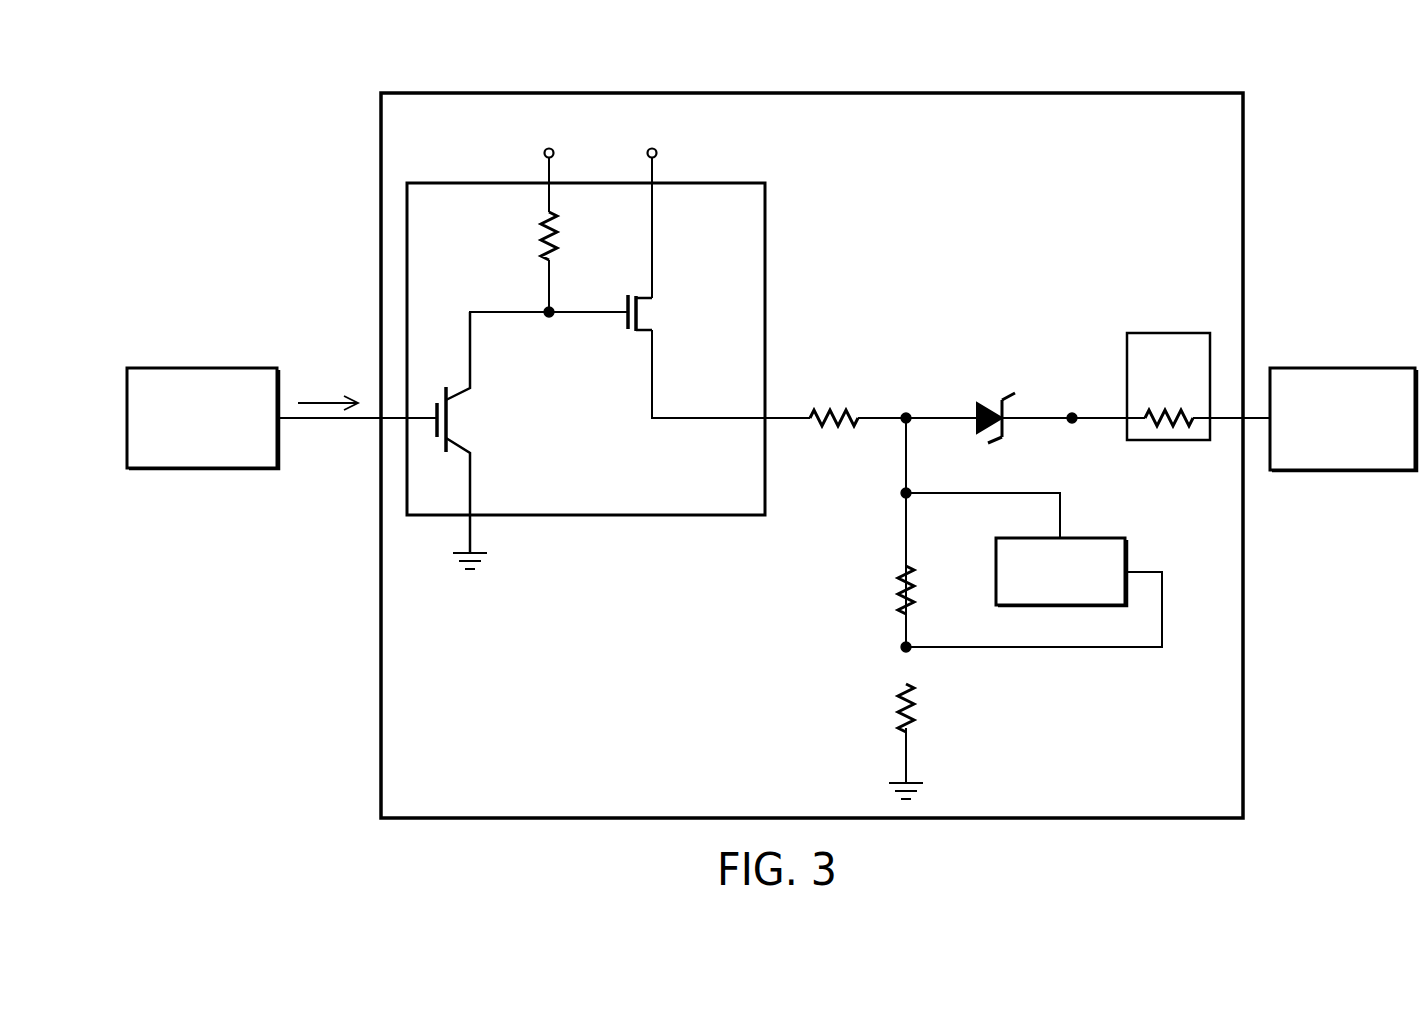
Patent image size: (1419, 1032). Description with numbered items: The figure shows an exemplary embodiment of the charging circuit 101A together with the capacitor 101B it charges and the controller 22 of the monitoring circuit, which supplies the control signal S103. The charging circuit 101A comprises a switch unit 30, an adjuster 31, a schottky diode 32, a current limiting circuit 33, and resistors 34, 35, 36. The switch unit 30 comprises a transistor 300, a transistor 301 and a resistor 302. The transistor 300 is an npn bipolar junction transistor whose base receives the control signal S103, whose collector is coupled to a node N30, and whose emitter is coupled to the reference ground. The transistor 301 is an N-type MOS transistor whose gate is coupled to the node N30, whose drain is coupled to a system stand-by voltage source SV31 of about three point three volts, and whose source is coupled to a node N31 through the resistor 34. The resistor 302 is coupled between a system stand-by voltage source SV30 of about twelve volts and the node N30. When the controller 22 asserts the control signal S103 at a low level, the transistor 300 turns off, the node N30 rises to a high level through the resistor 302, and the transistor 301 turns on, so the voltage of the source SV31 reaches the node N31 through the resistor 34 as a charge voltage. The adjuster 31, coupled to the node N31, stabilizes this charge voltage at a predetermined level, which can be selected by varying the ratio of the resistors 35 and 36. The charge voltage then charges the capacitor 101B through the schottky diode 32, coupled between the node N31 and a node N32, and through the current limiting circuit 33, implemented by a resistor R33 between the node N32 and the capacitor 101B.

The controller 22 is at (189, 367).
The control signal S103 is at (319, 400).
The charging circuit 101A is at (1245, 130).
The capacitor 101B is at (1338, 367).
The switch unit 30 is at (767, 220).
The transistor 300 is at (476, 425).
The transistor 301 is at (660, 316).
The resistor 302 is at (536, 239).
The node N30 is at (549, 318).
The system stand-by voltage source SV30 is at (548, 161).
The system stand-by voltage source SV31 is at (651, 204).
The resistor 34 is at (828, 432).
The node N31 is at (906, 412).
The schottky diode 32 is at (994, 450).
The node N32 is at (1072, 412).
The current limiting circuit 33 is at (1170, 332).
The resistor R33 is at (1167, 406).
The adjuster 31 is at (1095, 534).
The resistor 35 is at (898, 586).
The resistor 36 is at (898, 704).